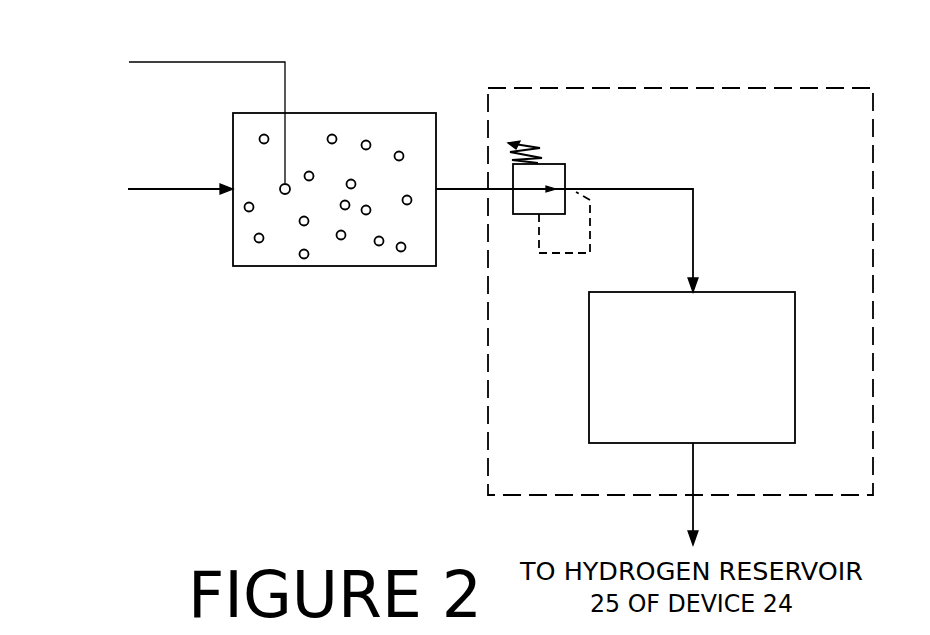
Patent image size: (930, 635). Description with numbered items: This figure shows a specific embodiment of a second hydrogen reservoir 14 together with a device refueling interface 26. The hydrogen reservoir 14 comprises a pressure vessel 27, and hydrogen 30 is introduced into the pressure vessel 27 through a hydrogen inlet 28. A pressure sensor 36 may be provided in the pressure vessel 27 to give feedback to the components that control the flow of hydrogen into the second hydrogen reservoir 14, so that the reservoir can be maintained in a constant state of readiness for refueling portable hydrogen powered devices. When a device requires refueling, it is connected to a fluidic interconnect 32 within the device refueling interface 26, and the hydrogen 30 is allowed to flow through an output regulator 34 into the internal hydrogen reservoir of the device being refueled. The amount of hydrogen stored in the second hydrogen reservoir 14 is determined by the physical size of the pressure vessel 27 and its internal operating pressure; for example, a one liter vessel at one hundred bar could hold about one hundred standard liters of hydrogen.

The second hydrogen reservoir 14 is at (346, 63).
The pressure vessel 27 is at (393, 113).
The pressure sensor 36 is at (281, 186).
The hydrogen inlet 28 is at (178, 188).
The hydrogen 30 is at (328, 197).
The device refueling interface 26 is at (682, 88).
The output regulator 34 is at (567, 164).
The fluidic interconnect 32 is at (589, 368).